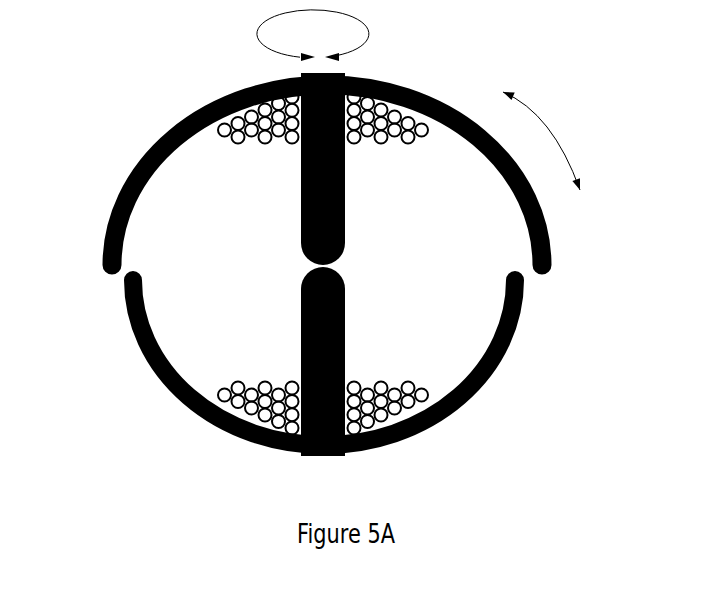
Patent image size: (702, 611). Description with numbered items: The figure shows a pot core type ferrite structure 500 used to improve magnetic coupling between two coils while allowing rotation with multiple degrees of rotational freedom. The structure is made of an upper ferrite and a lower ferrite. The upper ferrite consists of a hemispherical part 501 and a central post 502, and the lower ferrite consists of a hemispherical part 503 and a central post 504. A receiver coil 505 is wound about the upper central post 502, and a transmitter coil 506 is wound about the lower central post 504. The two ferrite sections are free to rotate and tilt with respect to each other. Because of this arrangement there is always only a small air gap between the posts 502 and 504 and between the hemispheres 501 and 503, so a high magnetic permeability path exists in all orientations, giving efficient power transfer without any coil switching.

The pot core type ferrite structure 500 is at (96, 103).
The hemispherical part 501 is at (107, 229).
The central post 502 is at (300, 189).
The hemispherical part 503 is at (137, 344).
The central post 504 is at (300, 336).
The receiver coil 505 is at (381, 145).
The transmitter coil 506 is at (374, 382).